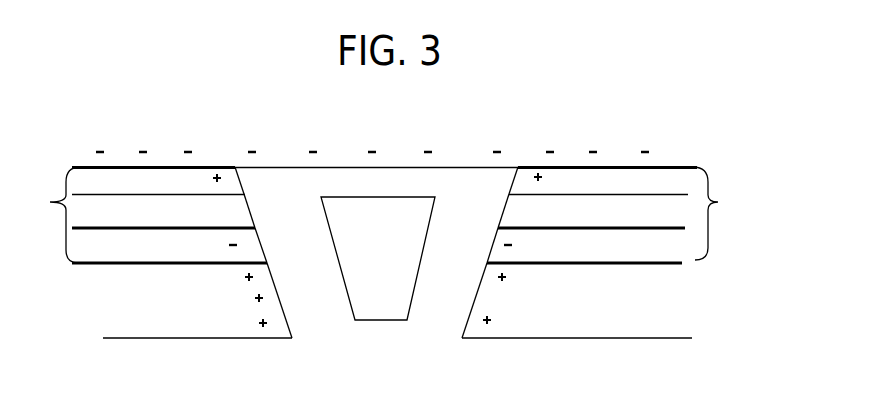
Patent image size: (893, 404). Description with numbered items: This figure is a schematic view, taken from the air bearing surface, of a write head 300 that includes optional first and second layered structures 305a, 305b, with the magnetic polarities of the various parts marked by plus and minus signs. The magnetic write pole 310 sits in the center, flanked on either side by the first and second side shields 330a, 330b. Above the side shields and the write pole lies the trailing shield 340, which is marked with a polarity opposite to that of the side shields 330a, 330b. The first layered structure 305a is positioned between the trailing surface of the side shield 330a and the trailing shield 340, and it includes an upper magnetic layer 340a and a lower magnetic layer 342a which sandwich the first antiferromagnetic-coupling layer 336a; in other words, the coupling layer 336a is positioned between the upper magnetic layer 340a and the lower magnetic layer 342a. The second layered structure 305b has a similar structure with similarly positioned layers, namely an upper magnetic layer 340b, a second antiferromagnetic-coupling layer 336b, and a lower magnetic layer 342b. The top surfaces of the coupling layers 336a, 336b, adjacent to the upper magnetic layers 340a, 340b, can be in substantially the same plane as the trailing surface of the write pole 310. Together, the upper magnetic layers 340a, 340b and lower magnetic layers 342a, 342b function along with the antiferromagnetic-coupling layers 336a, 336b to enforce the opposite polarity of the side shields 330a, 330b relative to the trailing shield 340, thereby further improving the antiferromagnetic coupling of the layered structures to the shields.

The write head 300 is at (560, 128).
The first layered structure 305a is at (142, 215).
The second layered structure 305b is at (627, 215).
The magnetic write pole 310 is at (403, 254).
The first side shield 330a is at (186, 294).
The second side shield 330b is at (611, 308).
The first antiferromagnetic-coupling layer 336a is at (121, 224).
The second antiferromagnetic-coupling layer 336b is at (636, 224).
The trailing shield 340 is at (410, 138).
The upper magnetic layer 340a is at (169, 192).
The upper magnetic layer 340b is at (641, 190).
The lower magnetic layer 342a is at (178, 256).
The lower magnetic layer 342b is at (633, 256).